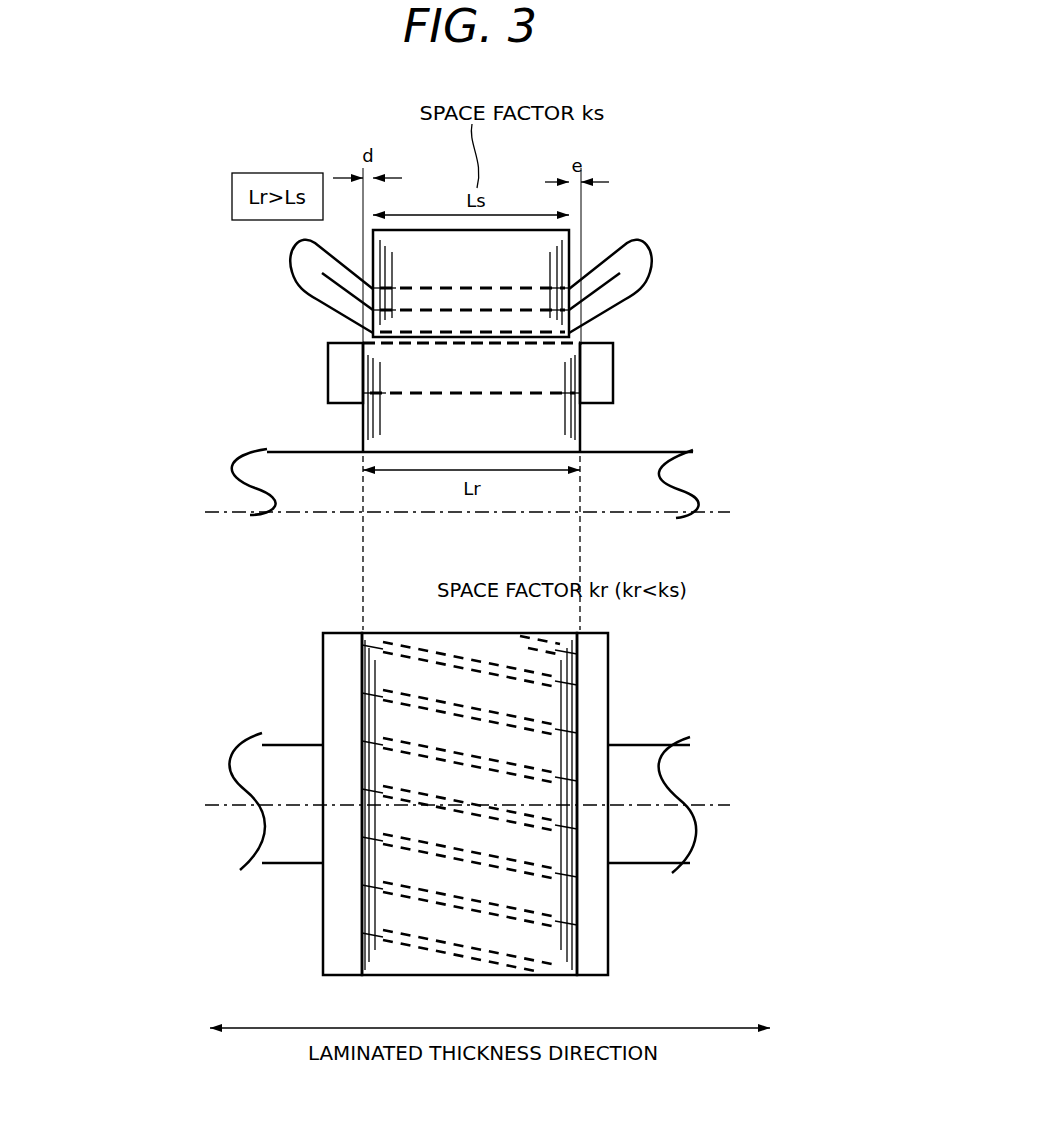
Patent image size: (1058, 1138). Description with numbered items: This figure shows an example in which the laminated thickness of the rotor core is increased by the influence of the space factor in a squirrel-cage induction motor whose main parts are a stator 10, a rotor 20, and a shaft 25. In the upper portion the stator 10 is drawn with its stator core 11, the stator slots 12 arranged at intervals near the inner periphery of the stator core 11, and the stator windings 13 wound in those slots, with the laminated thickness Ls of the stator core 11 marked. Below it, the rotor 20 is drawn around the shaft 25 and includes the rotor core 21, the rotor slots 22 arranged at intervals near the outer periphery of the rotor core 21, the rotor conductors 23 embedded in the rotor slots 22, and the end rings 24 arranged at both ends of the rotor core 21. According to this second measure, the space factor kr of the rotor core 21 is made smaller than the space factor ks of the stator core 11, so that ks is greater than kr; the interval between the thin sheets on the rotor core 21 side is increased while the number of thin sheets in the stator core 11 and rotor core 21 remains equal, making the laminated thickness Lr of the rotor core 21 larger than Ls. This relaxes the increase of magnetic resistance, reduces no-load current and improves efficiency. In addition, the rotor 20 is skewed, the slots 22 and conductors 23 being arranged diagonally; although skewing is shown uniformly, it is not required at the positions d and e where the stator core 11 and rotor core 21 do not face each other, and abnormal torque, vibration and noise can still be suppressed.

The stator 10 is at (527, 228).
The stator core 11 is at (450, 265).
The stator slots 12 is at (445, 288).
The stator windings 13 is at (623, 253).
The rotor 20 is at (282, 450).
The rotor core 21 is at (420, 428).
The rotor slots 22 is at (505, 395).
The rotor conductors 23 is at (527, 370).
The end rings 24 is at (338, 363).
The shaft 25 is at (310, 495).